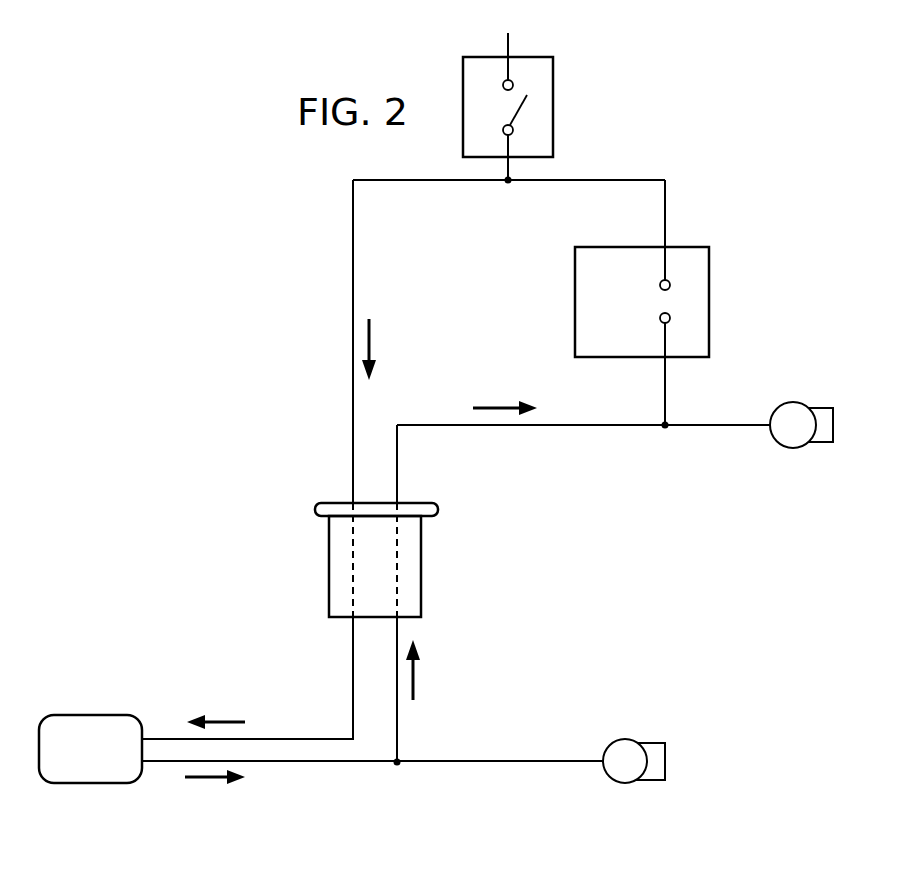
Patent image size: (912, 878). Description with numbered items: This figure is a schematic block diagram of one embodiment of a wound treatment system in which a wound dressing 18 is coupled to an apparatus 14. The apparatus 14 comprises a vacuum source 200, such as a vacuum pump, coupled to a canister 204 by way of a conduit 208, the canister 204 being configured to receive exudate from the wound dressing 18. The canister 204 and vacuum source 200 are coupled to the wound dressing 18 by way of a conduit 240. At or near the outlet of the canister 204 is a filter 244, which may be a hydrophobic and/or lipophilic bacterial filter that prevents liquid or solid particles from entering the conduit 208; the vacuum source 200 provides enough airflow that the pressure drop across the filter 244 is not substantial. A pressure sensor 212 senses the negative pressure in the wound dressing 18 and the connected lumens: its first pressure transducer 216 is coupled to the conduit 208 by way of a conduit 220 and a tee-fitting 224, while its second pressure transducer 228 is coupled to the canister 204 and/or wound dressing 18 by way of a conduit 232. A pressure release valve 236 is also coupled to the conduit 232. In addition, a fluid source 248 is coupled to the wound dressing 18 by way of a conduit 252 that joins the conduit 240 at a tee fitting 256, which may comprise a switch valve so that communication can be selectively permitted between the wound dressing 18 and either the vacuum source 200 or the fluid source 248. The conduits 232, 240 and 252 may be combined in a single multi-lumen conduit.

The apparatus 14 is at (250, 350).
The wound dressing 18 is at (90, 784).
The vacuum source 200 is at (795, 447).
The canister 204 is at (338, 567).
The conduit 208 is at (545, 427).
The pressure sensor 212 is at (681, 302).
The first pressure transducer 216 is at (659, 316).
The conduit 220 is at (668, 392).
The tee-fitting 224 is at (665, 432).
The second pressure transducer 228 is at (659, 283).
The conduit 232 is at (350, 690).
The pressure release valve 236 is at (553, 106).
The conduit 240 is at (397, 710).
The filter 244 is at (315, 508).
The fluid source 248 is at (627, 784).
The conduit 252 is at (505, 763).
The tee fitting 256 is at (397, 767).